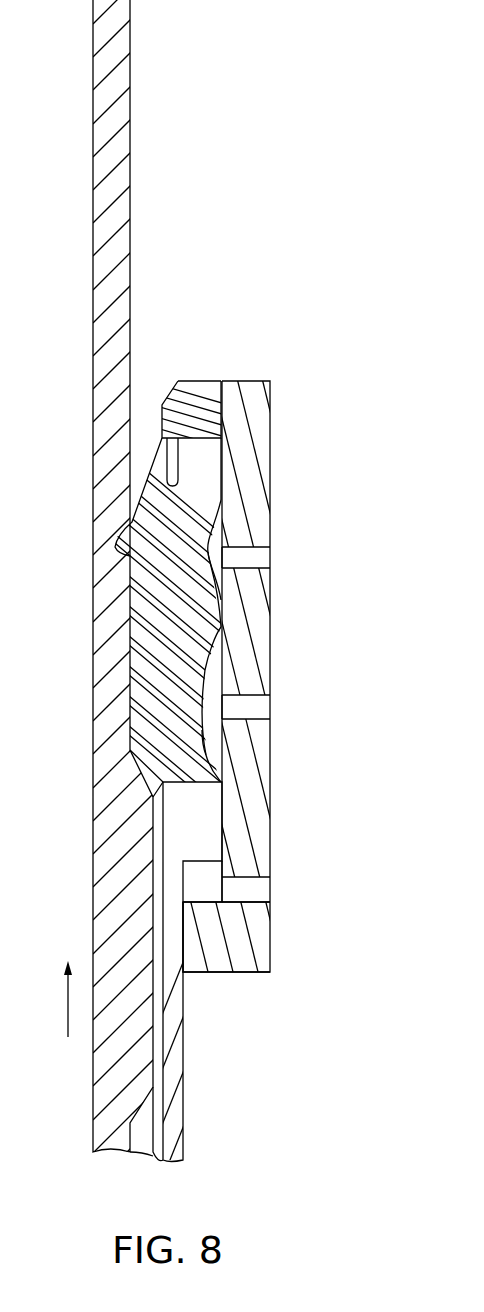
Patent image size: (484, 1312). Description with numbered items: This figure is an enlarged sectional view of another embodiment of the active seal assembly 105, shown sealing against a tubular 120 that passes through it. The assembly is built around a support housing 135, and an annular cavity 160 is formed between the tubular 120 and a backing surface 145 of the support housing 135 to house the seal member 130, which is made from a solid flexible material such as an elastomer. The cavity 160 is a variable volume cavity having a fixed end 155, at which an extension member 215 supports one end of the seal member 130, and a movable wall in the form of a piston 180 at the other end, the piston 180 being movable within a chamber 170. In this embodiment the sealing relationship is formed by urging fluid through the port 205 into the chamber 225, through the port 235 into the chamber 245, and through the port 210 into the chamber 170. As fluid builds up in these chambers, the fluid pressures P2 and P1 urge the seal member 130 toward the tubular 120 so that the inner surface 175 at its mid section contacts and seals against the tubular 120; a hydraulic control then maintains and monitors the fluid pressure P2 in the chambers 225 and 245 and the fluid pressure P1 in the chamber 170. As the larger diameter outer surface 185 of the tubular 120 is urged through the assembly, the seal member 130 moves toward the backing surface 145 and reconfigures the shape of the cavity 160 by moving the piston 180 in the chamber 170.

The tubular 120 is at (110, 164).
The active seal assembly 105 is at (242, 346).
The seal member 130 is at (222, 452).
The fixed end 155 is at (207, 400).
The inner surface 175 is at (132, 522).
The extension member 215 is at (178, 460).
The backing surface 145 is at (217, 634).
The annular cavity 160 is at (210, 660).
The chamber 225 is at (224, 565).
The chamber 245 is at (215, 735).
The fluid pressure P2 is at (222, 545).
The support housing 135 is at (248, 965).
The port 205 is at (252, 556).
The port 235 is at (255, 713).
The port 210 is at (247, 887).
The chamber 170 is at (200, 903).
The fluid pressure P1 is at (203, 870).
The piston 180 is at (193, 817).
The larger diameter outer surface 185 is at (156, 1053).